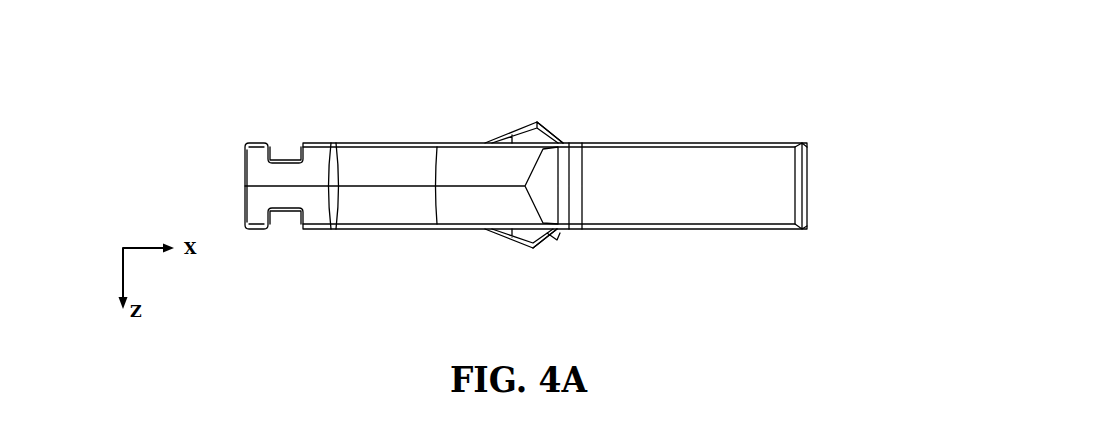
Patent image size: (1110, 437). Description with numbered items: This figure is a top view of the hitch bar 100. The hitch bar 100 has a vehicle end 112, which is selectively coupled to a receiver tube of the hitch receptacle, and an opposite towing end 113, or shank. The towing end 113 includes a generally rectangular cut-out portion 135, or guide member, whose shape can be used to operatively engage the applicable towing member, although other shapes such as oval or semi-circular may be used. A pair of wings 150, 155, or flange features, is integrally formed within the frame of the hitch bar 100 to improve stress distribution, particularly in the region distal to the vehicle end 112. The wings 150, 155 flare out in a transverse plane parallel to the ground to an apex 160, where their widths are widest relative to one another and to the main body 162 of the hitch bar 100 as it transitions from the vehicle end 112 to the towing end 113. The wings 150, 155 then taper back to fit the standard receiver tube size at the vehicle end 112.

The hitch bar 100 is at (140, 50).
The vehicle end 112 is at (802, 185).
The towing end 113 is at (245, 186).
The cut-out portion 135 is at (293, 162).
The wing 150 is at (513, 237).
The wing 155 is at (513, 133).
The apex 160 is at (533, 246).
The main body 162 is at (397, 186).